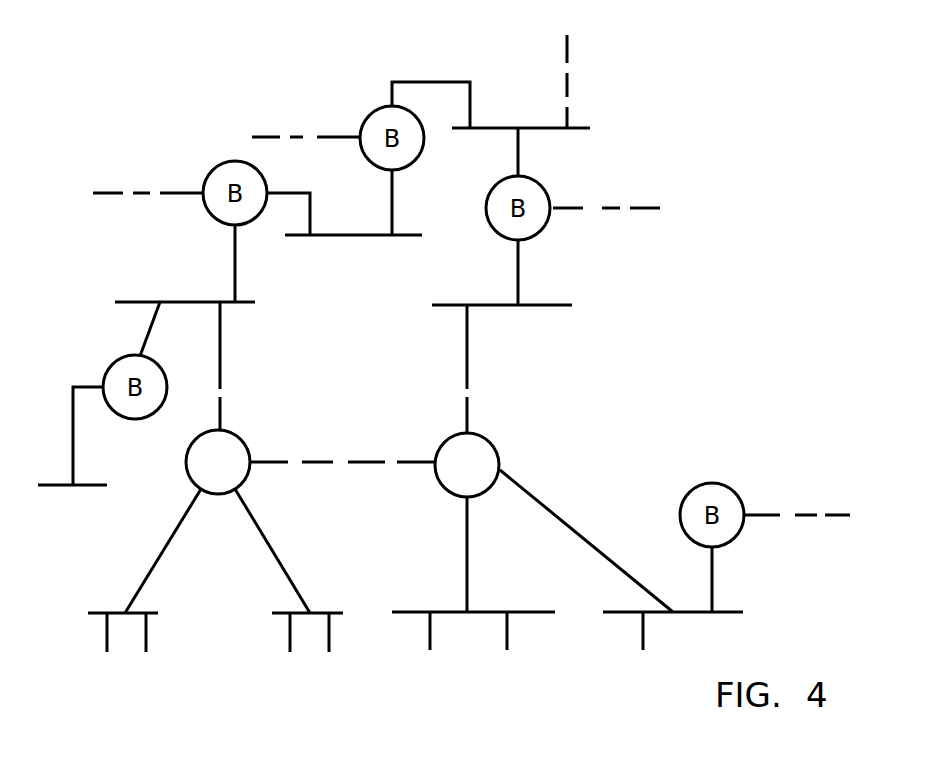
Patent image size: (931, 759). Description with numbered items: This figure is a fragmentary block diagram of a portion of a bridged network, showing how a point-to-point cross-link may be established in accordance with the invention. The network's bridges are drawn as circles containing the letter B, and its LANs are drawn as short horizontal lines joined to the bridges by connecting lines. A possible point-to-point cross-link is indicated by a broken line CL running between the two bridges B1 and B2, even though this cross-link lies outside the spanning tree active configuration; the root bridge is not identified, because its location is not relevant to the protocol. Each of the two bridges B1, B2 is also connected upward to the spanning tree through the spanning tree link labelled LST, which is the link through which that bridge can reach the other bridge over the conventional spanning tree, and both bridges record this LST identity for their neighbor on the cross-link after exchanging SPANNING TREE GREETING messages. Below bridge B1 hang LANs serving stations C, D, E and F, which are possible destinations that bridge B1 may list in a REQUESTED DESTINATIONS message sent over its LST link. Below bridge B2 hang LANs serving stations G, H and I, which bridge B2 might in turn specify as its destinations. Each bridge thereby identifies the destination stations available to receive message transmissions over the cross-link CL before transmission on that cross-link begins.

The point-to-point cross-link CL is at (313, 462).
The bridge B1 is at (218, 462).
The bridge B2 is at (467, 465).
The station C is at (106, 648).
The station D is at (145, 648).
The station E is at (288, 648).
The station F is at (328, 648).
The station G is at (429, 647).
The station H is at (506, 647).
The station I is at (642, 648).